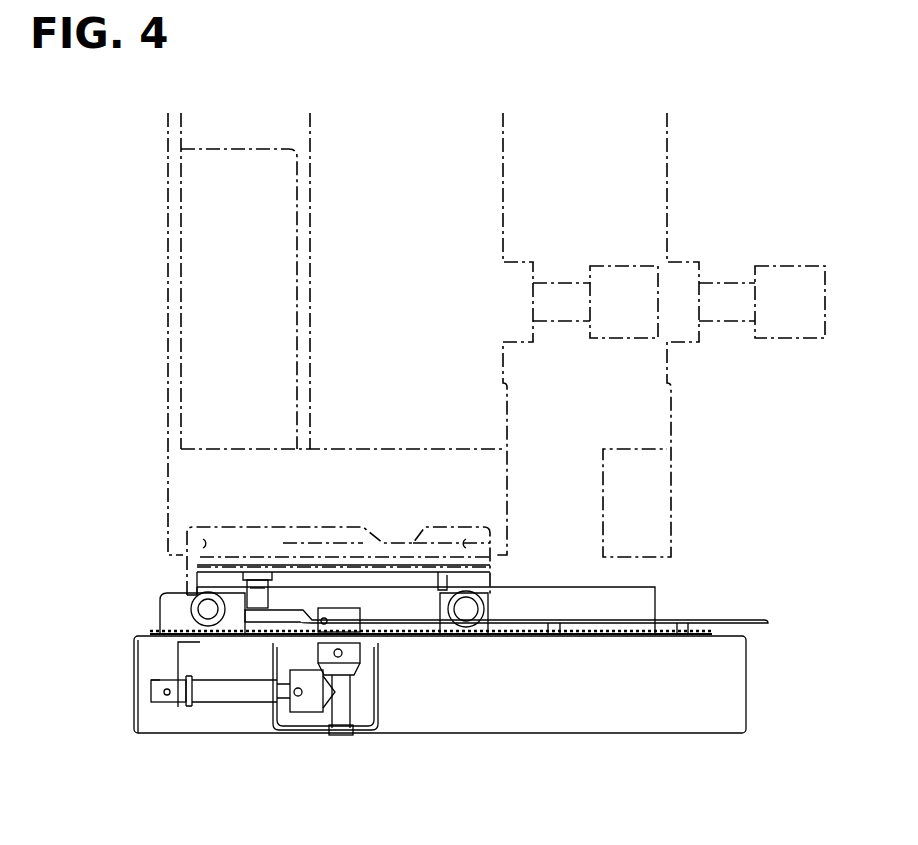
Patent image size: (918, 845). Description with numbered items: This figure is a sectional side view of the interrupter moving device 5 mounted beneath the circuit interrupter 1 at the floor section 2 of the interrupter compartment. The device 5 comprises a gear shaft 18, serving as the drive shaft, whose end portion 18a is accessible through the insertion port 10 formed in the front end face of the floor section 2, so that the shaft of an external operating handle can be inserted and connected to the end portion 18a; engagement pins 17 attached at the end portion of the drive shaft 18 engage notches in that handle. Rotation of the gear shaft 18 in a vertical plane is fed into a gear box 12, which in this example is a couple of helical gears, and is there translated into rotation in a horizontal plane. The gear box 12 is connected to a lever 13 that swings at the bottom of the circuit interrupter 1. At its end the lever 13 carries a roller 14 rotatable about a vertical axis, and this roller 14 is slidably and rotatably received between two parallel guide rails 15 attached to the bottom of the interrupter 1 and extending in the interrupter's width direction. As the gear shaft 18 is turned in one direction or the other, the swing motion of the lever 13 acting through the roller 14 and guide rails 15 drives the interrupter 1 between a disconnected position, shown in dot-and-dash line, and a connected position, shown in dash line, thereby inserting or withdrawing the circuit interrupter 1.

The circuit interrupter 1 is at (166, 347).
The floor section 2 is at (152, 628).
The interrupter moving device 5 is at (438, 774).
The insertion port 10 is at (133, 712).
The gear box 12 is at (352, 730).
The lever 13 is at (245, 640).
The roller 14 is at (268, 645).
The guide rails 15 is at (262, 520).
The engagement pins 17 is at (168, 698).
The gear shaft 18 is at (255, 704).
The end portion 18a is at (152, 678).